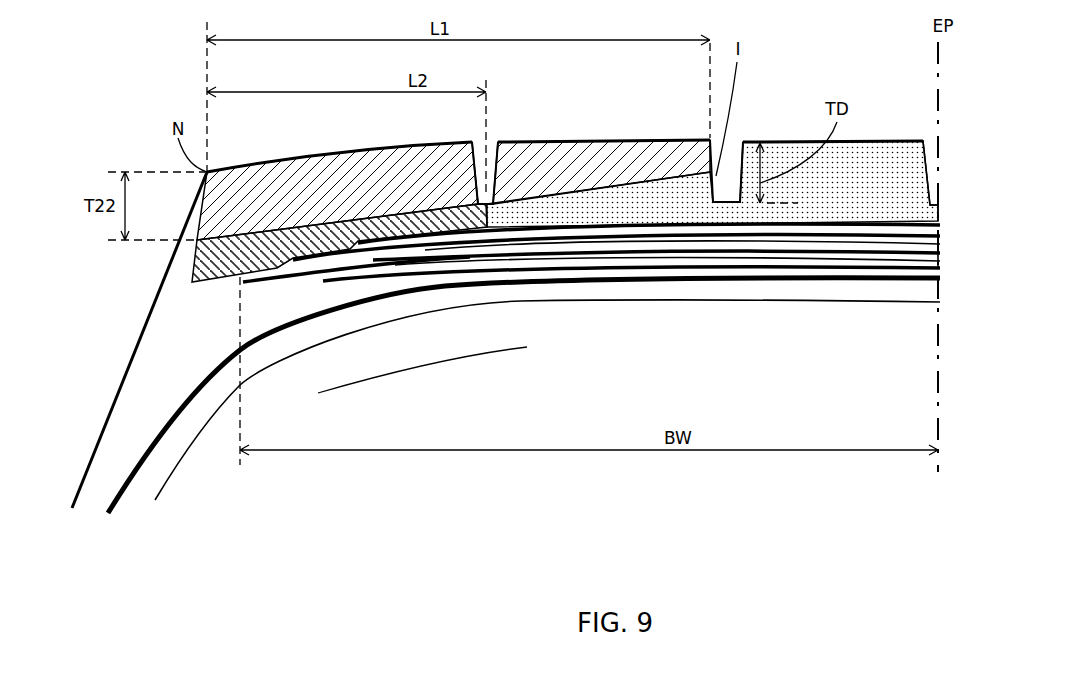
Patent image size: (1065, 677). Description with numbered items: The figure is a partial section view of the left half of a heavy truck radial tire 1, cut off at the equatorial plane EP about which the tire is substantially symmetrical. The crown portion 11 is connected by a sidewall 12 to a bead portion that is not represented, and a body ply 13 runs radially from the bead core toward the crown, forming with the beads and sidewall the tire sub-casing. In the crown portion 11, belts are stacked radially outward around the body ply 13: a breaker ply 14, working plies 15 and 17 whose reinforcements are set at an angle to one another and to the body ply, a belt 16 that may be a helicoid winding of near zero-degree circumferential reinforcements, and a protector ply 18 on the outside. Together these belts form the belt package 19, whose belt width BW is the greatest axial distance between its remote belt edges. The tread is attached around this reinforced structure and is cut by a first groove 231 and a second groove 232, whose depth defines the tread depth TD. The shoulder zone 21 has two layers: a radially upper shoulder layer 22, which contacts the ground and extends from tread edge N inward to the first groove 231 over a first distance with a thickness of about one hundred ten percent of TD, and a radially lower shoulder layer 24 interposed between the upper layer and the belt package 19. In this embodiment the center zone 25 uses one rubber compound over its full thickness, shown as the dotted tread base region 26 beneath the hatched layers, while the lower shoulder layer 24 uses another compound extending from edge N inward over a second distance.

The heavy truck radial tire 1 is at (97, 132).
The crown portion 11 is at (112, 282).
The sidewall 12 is at (127, 443).
The body ply 13 is at (115, 500).
The breaker ply 14 is at (343, 283).
The working ply 15 is at (267, 282).
The belt of circumferential reinforcements 16 is at (390, 253).
The working ply 17 is at (430, 247).
The protector ply 18 is at (467, 238).
The belt package 19 is at (483, 366).
The shoulder zone 21 is at (320, 115).
The upper shoulder layer 22 is at (368, 168).
The lower shoulder layer 24 is at (290, 237).
The center zone 25 is at (867, 108).
The base tread rubber 26 is at (680, 200).
The first groove 231 is at (493, 145).
The second groove 232 is at (738, 146).